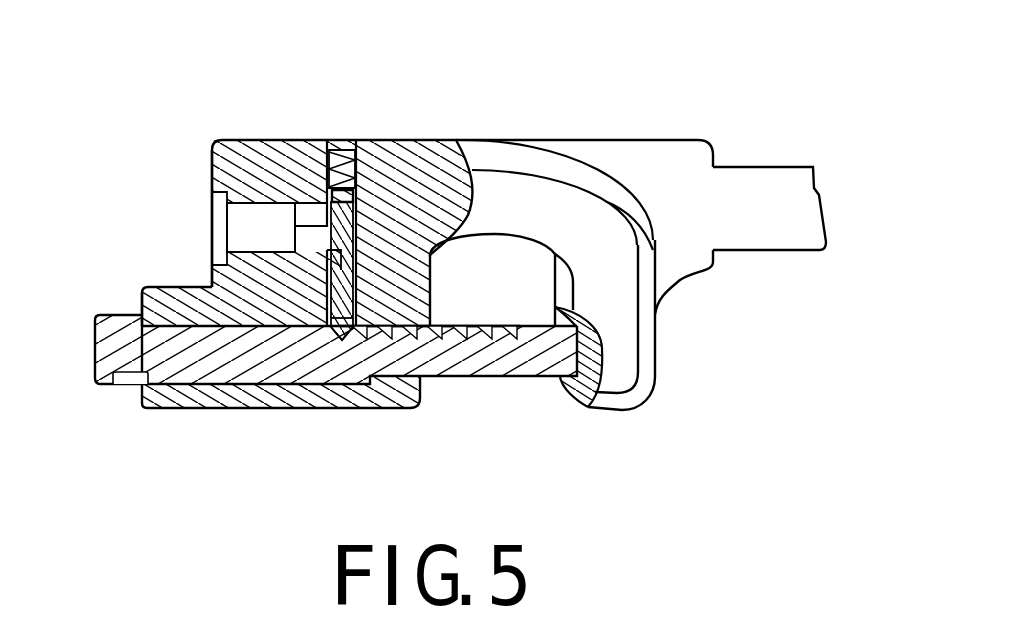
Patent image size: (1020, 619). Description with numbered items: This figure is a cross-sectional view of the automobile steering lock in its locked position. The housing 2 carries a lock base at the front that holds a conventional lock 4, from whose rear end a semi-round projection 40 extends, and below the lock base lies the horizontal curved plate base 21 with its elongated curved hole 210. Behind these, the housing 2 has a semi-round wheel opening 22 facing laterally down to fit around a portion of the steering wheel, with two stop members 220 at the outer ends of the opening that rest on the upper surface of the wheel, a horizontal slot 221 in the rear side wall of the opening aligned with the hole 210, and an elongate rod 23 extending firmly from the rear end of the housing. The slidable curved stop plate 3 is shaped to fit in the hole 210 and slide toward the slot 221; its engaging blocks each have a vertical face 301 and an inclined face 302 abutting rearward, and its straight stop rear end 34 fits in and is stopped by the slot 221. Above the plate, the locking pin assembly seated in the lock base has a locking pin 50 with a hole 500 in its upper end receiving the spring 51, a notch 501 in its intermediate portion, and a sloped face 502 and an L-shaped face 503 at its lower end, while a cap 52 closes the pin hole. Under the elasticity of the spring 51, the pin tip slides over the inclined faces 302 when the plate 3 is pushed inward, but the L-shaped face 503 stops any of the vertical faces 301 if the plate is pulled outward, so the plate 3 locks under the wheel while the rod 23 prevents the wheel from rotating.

The housing 2 is at (657, 140).
The wheel opening 22 is at (497, 252).
The stop members 220 is at (527, 196).
The horizontal slot 221 is at (601, 352).
The elongate rod 23 is at (765, 167).
The slidable curved stop plate 3 is at (113, 313).
The vertical face 301 is at (453, 341).
The inclined face 302 is at (478, 341).
The straight stop rear end 34 is at (560, 380).
The lock 4 is at (249, 220).
The semi-round projection 40 is at (311, 230).
The curved plate base 21 is at (170, 293).
The elongated curved hole 210 is at (198, 287).
The locking pin 50 is at (360, 212).
The hole 500 is at (313, 192).
The notch 501 is at (292, 260).
The sloped face 502 is at (336, 338).
The L-shaped face 503 is at (352, 340).
The spring 51 is at (358, 150).
The cap 52 is at (342, 150).